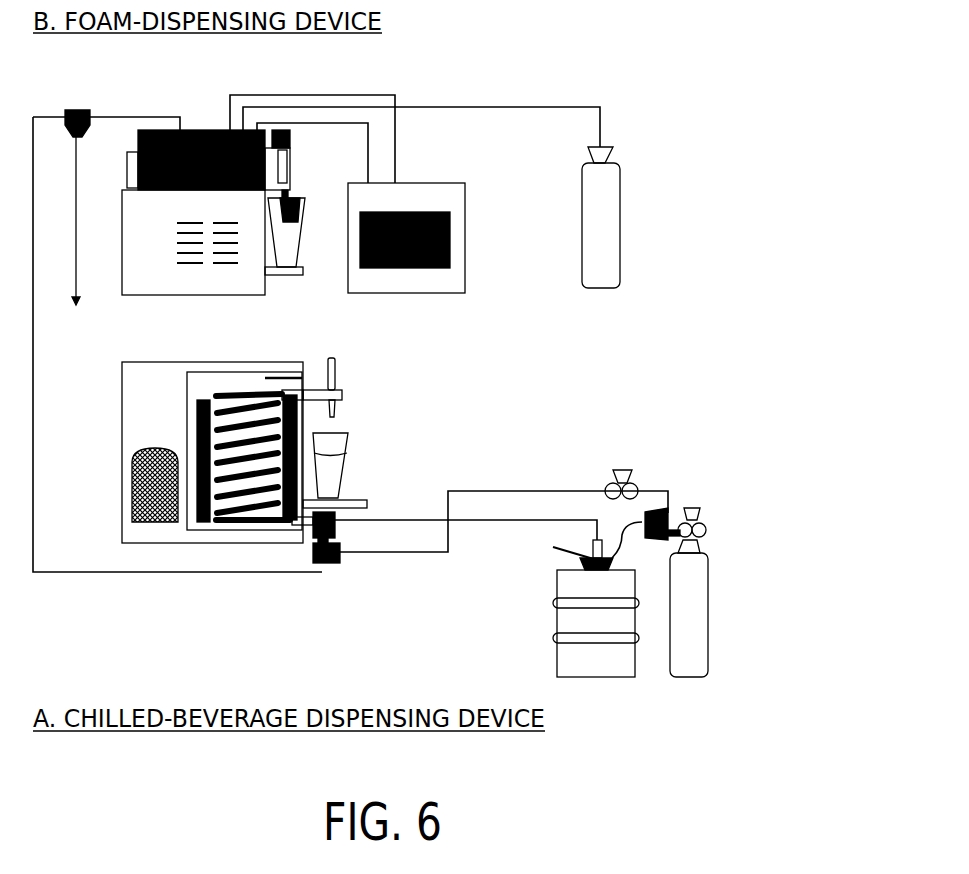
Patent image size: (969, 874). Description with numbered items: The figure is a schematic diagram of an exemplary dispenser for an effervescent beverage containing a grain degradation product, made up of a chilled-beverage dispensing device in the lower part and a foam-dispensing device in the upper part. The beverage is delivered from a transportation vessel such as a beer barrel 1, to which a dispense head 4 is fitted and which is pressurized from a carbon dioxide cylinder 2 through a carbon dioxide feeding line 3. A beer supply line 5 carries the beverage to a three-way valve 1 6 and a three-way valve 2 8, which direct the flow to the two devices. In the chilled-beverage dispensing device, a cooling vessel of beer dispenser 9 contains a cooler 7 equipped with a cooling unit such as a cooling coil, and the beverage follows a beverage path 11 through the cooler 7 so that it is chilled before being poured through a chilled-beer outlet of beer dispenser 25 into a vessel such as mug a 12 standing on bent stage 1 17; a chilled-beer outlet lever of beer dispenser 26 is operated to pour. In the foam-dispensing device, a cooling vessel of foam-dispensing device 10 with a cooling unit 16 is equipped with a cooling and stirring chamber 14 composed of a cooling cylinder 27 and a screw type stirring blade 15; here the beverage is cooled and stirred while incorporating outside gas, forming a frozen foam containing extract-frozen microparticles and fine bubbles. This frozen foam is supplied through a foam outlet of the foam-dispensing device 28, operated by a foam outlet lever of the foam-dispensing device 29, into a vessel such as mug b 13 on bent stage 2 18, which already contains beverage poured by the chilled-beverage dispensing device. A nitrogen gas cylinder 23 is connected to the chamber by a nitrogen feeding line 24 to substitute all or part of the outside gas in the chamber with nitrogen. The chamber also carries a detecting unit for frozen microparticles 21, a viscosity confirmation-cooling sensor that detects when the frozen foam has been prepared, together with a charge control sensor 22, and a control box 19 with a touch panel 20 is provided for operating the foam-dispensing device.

The beer barrel 1 is at (572, 660).
The carbon dioxide cylinder 2 is at (697, 605).
The carbon dioxide feeding line 3 is at (640, 530).
The dispense head 4 is at (580, 563).
The beer supply line 5 is at (460, 518).
The three-way valve 1 6 is at (336, 545).
The cooler 7 is at (216, 378).
The three-way valve 2 8 is at (320, 562).
The cooling vessel of beer dispenser 9 is at (142, 368).
The cooling vessel of foam-dispensing device 10 is at (128, 265).
The beverage path 11 is at (228, 530).
The mug a 12 is at (346, 470).
The mug b 13 is at (298, 240).
The cooling and stirring chamber 14 is at (155, 132).
The screw type stirring blade 15 is at (130, 186).
The cooling unit 16 is at (200, 262).
The bent stage 1 17 is at (366, 503).
The bent stage 2 18 is at (298, 276).
The control box 19 is at (430, 290).
The touch panel 20 is at (450, 237).
The detecting unit for frozen microparticles 21 is at (396, 155).
The charge control sensor 22 is at (368, 143).
The nitrogen gas cylinder 23 is at (605, 210).
The nitrogen feeding line 24 is at (602, 98).
The chilled-beer outlet of beer dispenser 25 is at (340, 416).
The chilled-beer outlet lever of beer dispenser 26 is at (336, 369).
The cooling cylinder 27 is at (262, 127).
The foam outlet of the foam-dispensing device 28 is at (290, 171).
The foam outlet lever of the foam-dispensing device 29 is at (275, 130).